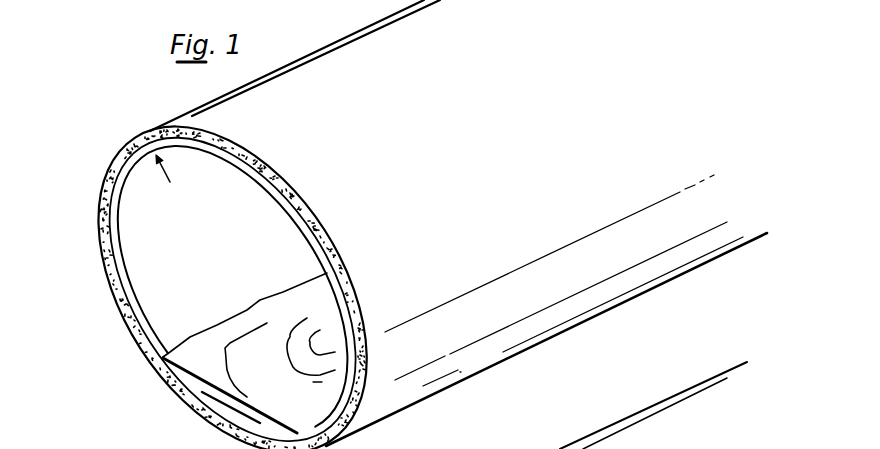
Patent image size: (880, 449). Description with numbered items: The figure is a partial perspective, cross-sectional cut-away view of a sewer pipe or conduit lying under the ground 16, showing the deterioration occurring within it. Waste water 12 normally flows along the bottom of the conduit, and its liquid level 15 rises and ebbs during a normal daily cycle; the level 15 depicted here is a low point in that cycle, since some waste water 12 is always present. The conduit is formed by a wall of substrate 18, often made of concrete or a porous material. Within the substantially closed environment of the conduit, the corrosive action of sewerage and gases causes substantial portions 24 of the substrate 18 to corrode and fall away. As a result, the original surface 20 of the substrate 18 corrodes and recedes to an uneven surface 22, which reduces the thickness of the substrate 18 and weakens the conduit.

The waste water 12 is at (279, 384).
The liquid level 15 is at (265, 297).
The ground 16 is at (314, 24).
The substrate 18 is at (102, 228).
The original surface 20 is at (127, 201).
The uneven surface 22 is at (232, 143).
The portions of the substrate 24 is at (148, 138).